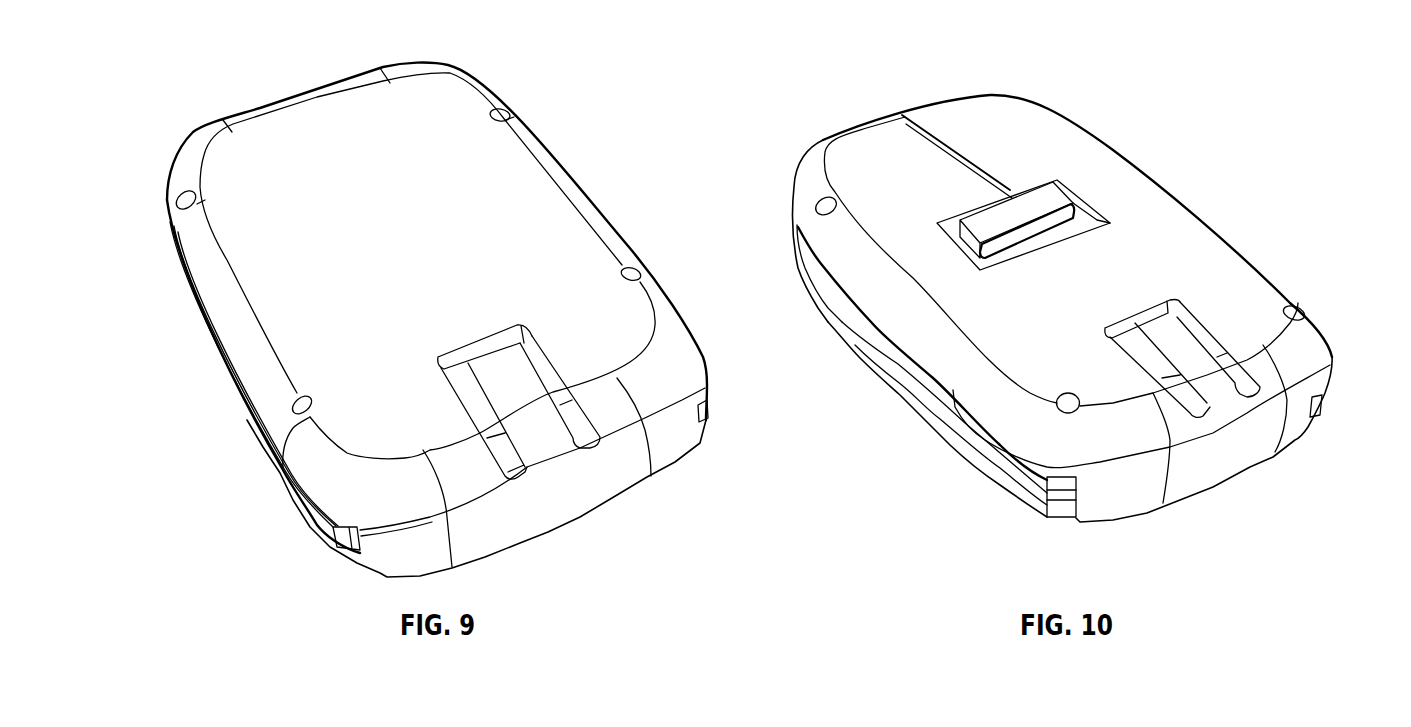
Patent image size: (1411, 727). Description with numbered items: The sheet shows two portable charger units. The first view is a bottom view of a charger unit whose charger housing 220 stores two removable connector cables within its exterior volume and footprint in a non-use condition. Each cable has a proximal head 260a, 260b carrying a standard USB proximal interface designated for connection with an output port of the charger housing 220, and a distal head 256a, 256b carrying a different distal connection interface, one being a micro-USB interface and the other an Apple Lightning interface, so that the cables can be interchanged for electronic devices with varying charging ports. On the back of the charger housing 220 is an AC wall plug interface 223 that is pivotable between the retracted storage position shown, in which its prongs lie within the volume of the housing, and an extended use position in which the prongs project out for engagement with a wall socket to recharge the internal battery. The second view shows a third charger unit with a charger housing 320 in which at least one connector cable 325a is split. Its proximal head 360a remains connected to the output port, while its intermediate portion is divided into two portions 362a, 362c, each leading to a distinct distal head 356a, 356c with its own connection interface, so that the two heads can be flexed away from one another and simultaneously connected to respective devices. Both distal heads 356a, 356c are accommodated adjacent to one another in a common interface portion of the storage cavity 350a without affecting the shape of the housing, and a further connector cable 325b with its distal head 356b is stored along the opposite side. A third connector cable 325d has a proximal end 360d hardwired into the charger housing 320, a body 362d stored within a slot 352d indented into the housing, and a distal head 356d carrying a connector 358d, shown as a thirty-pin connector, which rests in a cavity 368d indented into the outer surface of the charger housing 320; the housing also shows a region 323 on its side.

In FIG. 9, the proximal head 260b is at (456, 66).
In FIG. 9, the proximal head 260a is at (186, 282).
In FIG. 9, the charger housing 220 is at (231, 363).
In FIG. 9, the distal head 256a is at (330, 535).
In FIG. 9, the distal head 256b is at (708, 404).
In FIG. 9, the AC wall plug interface 223 is at (580, 447).
In FIG. 10, the charger housing 320 is at (1193, 220).
In FIG. 10, the storage cavity 350a is at (788, 228).
In FIG. 10, the proximal head 360a is at (798, 243).
In FIG. 10, the connector cable 325a is at (830, 306).
In FIG. 10, the intermediate portion 362a is at (898, 364).
In FIG. 10, the intermediate portion 362c is at (944, 418).
In FIG. 10, the distal head 356a is at (1030, 479).
In FIG. 10, the distal head 356c is at (1050, 500).
In FIG. 10, the third connector cable 325d is at (937, 130).
In FIG. 10, the slot 352d is at (978, 165).
In FIG. 10, the proximal end 360d is at (907, 117).
In FIG. 10, the body 362d is at (1033, 197).
In FIG. 10, the connector 358d is at (1072, 195).
In FIG. 10, the distal head 356d is at (1033, 197).
In FIG. 10, the cavity 368d is at (1095, 210).
In FIG. 10, the housing corner seam 323 is at (1247, 412).
In FIG. 10, the connector cable 325b is at (1330, 377).
In FIG. 10, the distal head 356b is at (1320, 404).